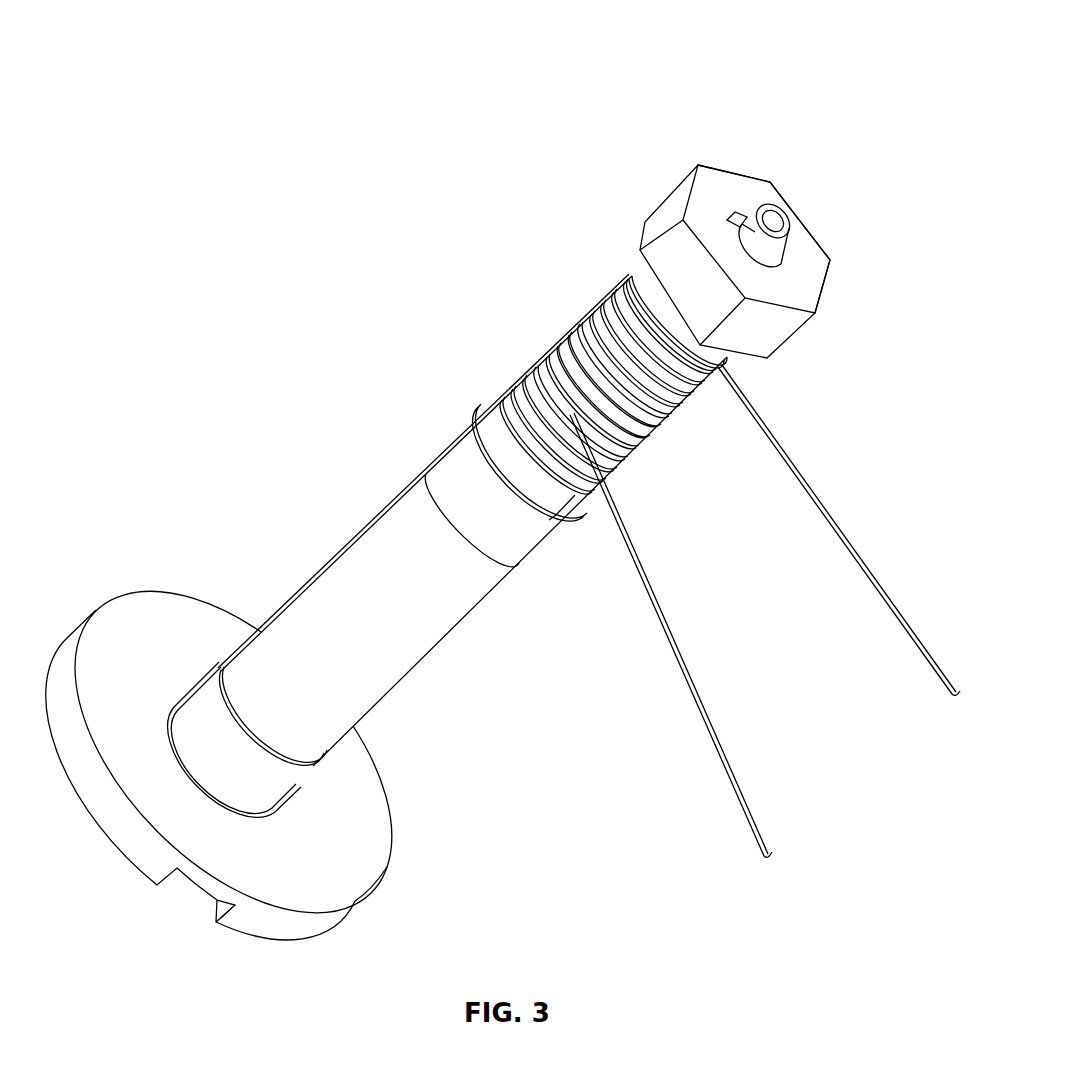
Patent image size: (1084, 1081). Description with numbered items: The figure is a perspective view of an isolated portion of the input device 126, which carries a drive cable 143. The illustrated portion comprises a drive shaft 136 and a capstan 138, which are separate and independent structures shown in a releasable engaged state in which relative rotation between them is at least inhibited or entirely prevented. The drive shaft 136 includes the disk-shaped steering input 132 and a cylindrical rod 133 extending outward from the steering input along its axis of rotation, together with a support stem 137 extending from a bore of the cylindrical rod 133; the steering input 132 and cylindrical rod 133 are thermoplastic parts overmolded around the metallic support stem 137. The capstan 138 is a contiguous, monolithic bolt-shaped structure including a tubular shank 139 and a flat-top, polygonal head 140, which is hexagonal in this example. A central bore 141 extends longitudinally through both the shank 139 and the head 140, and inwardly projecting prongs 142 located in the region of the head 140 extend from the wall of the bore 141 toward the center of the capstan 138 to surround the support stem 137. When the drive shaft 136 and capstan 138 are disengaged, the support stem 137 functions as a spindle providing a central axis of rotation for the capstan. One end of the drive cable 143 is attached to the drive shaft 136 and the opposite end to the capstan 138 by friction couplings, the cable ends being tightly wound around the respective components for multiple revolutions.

The input device 126 is at (738, 95).
The steering input 132 is at (395, 847).
The cylindrical rod 133 is at (438, 645).
The drive shaft 136 is at (347, 472).
The support stem 137 is at (781, 206).
The capstan 138 is at (866, 132).
The tubular shank 139 is at (583, 318).
The polygonal head 140 is at (677, 193).
The central bore 141 is at (733, 213).
The inwardly projecting prongs 142 is at (790, 270).
The drive cable 143 is at (838, 522).